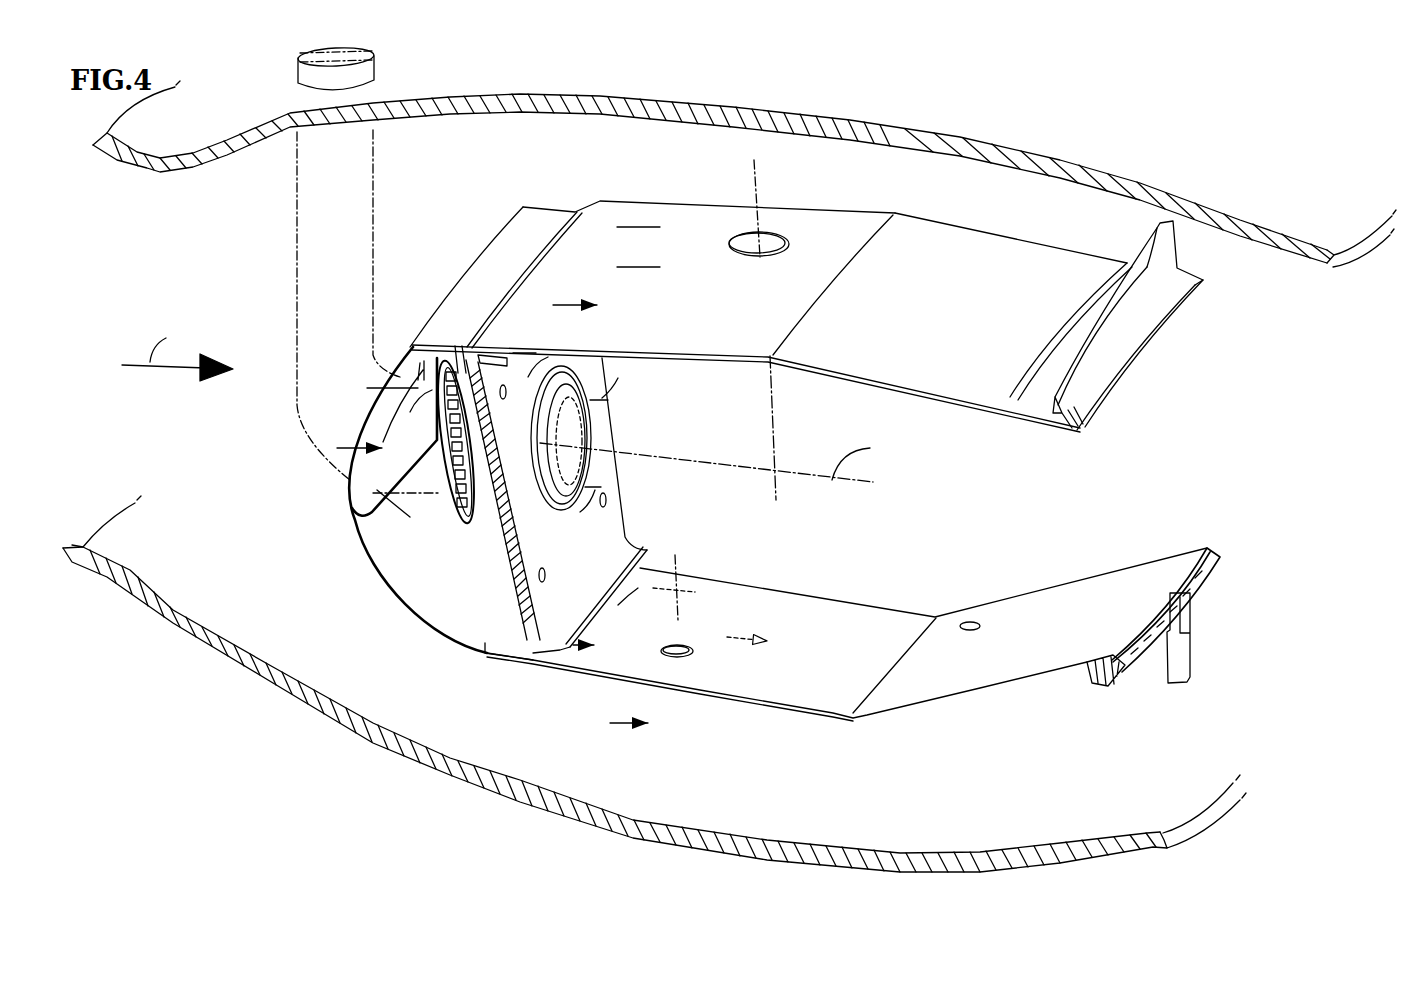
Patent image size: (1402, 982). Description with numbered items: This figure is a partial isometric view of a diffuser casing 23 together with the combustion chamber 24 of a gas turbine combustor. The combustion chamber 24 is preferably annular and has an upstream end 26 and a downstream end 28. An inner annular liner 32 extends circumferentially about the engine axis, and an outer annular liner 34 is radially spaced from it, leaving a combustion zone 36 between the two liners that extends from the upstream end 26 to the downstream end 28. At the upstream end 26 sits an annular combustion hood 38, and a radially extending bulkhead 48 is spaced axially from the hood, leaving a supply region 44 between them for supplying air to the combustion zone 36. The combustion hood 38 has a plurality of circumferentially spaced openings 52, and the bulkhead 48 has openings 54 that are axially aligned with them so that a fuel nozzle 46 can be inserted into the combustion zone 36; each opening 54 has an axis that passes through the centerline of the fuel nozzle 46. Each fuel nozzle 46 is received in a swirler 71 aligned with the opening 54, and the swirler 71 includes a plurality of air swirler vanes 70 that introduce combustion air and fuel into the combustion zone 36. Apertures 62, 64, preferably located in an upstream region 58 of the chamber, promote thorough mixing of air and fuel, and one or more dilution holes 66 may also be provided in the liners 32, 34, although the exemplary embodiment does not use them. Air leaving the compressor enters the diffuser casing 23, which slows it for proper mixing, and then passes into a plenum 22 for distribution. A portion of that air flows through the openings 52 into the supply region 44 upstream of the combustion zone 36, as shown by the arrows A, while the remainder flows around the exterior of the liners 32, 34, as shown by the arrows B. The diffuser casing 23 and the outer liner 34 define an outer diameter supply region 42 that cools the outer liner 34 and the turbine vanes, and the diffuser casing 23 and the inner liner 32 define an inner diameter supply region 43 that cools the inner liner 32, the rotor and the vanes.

The plenum 22 is at (248, 266).
The diffuser casing 23 is at (833, 110).
The combustion chamber 24 is at (1197, 372).
The upstream end 26 is at (577, 657).
The downstream end 28 is at (1112, 665).
The inner annular liner 32 is at (773, 678).
The outer annular liner 34 is at (978, 262).
The combustion zone 36 is at (921, 532).
The combustion hood 38 is at (368, 400).
The outer diameter supply region 42 is at (846, 181).
The inner diameter supply region 43 is at (818, 787).
The supply region 44 is at (431, 591).
The fuel nozzle 46 is at (297, 407).
The bulkhead 48 is at (517, 590).
The opening 52 is at (377, 497).
The opening 54 is at (590, 428).
The upstream region 58 is at (728, 407).
The aperture 62 is at (670, 648).
The aperture 64 is at (745, 240).
The dilution hole 66 is at (972, 621).
The air swirler vane 70 is at (463, 520).
The swirler 71 is at (450, 482).